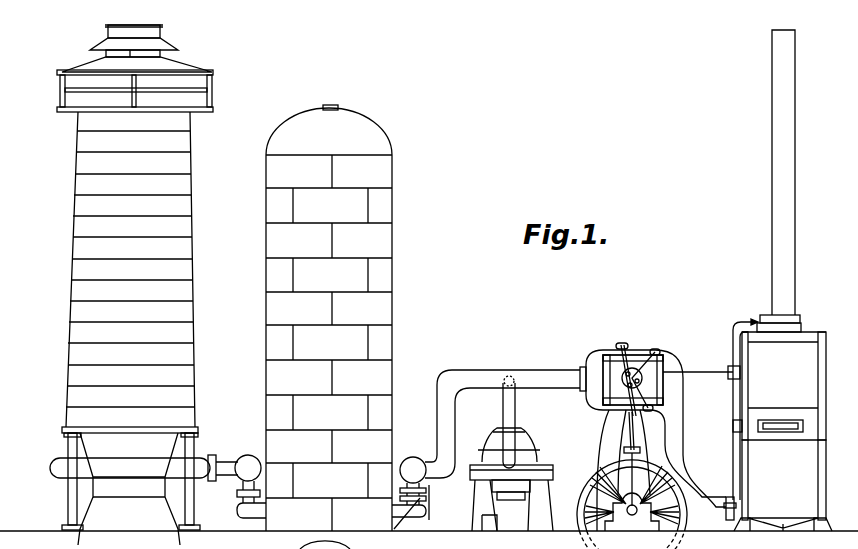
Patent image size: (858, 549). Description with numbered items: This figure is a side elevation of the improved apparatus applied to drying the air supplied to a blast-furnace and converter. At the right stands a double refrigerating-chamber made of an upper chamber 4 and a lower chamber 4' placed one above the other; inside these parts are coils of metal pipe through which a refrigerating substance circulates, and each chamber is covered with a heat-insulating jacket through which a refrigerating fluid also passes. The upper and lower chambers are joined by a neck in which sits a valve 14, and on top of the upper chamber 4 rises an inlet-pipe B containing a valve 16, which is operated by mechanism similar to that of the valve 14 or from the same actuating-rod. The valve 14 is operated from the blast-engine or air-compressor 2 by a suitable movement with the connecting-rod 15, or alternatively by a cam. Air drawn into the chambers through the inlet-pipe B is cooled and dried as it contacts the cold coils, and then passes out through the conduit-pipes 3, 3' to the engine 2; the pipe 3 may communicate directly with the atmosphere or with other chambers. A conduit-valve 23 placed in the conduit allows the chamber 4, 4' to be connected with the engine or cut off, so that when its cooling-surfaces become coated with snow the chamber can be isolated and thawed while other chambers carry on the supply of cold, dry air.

The blast-engine or air-compressor 2 is at (614, 382).
The connecting-rod 15 is at (642, 373).
The conduit-pipe 3 is at (695, 476).
The conduit-pipe 3' is at (685, 417).
The conduit-valve 23 is at (727, 512).
The upper refrigerating-chamber 4 is at (784, 386).
The lower refrigerating-chamber 4' is at (783, 485).
The valve 14 is at (748, 426).
The valve 16 is at (801, 331).
The inlet-pipe B is at (796, 290).